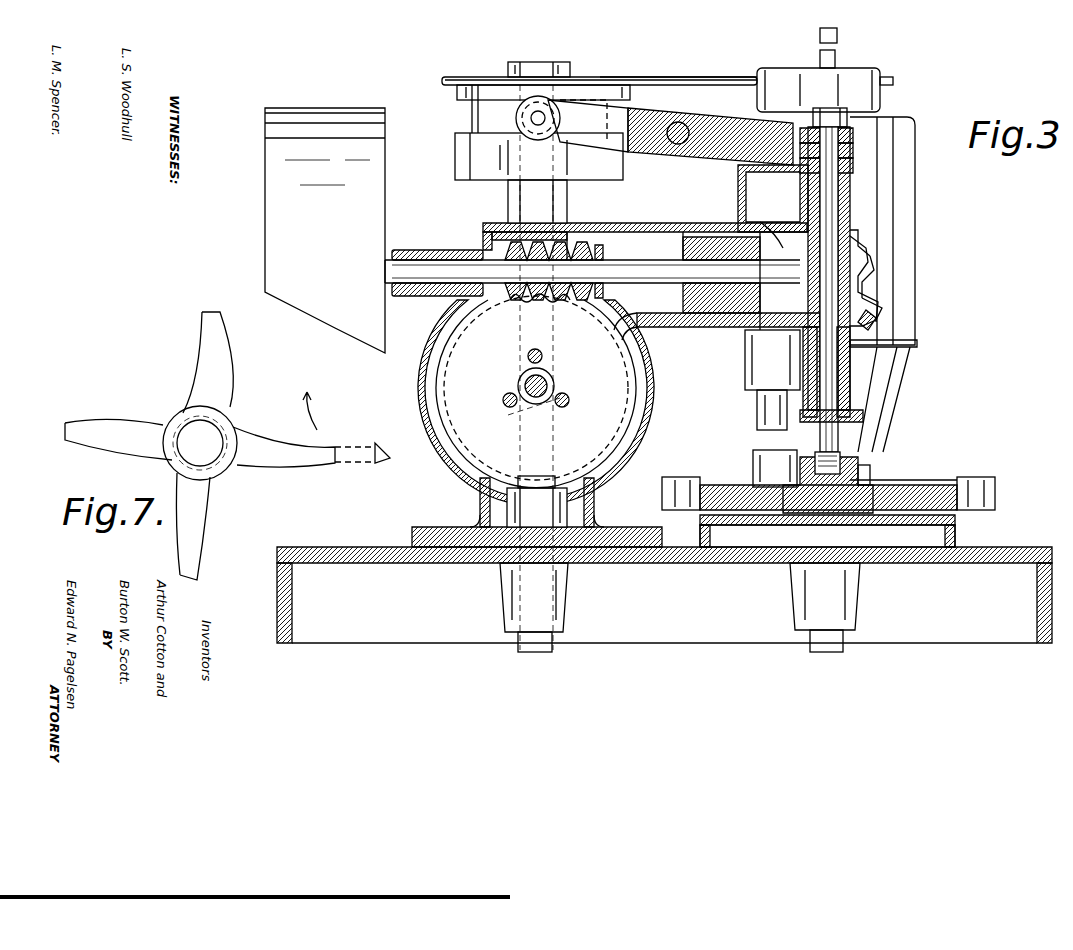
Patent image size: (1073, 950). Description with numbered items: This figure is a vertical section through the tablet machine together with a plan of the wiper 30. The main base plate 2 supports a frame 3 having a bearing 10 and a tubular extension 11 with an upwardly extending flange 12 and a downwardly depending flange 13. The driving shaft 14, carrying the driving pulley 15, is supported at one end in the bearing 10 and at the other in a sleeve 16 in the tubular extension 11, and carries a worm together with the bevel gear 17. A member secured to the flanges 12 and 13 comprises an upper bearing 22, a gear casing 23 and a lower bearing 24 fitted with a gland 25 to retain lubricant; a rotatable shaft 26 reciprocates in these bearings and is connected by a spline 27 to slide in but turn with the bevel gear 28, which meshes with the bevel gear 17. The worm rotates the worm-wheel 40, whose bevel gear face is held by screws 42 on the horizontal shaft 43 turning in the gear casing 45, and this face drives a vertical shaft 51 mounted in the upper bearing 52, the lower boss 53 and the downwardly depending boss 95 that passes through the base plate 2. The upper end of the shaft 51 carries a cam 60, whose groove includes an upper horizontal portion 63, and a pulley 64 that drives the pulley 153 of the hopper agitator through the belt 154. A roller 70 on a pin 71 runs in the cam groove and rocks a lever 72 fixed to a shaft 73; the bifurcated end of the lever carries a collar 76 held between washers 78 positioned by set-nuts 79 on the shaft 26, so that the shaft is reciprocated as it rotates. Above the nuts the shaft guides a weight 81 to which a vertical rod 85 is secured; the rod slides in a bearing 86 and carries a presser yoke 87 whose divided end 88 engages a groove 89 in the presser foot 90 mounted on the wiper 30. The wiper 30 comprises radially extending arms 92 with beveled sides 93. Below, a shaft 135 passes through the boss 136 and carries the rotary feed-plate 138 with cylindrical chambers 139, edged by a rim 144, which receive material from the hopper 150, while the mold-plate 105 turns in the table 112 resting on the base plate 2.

In FIG. 3, the main base plate 2 is at (335, 553).
In FIG. 3, the frame 3 is at (594, 516).
In FIG. 3, the bearing 10 is at (428, 248).
In FIG. 3, the tubular extension 11 is at (660, 228).
In FIG. 3, the upwardly extending flange 12 is at (795, 193).
In FIG. 3, the downwardly depending flange 13 is at (588, 258).
In FIG. 3, the driving shaft 14 is at (640, 272).
In FIG. 3, the driving pulley 15 is at (325, 230).
In FIG. 3, the sleeve 16 is at (683, 303).
In FIG. 3, the bevel gear 17 is at (758, 225).
In FIG. 3, the upper bearing 22 is at (842, 215).
In FIG. 3, the gear casing 23 is at (880, 300).
In FIG. 3, the lower bearing 24 is at (870, 390).
In FIG. 3, the gland 25 is at (863, 420).
In FIG. 3, the rotatable shaft 26 is at (845, 268).
In FIG. 3, the spline 27 is at (855, 248).
In FIG. 3, the bevel gear 28 is at (892, 314).
In FIG. 3, the wiper 30 is at (826, 508).
In FIG. 7, the wiper 30 is at (225, 433).
In FIG. 3, the worm-wheel 40 is at (536, 391).
In FIG. 3, the screws 42 is at (508, 405).
In FIG. 3, the horizontal shaft 43 is at (526, 383).
In FIG. 3, the gear casing 45 is at (655, 394).
In FIG. 3, the vertical shaft 51 is at (520, 645).
In FIG. 3, the upper bearing 52 is at (566, 201).
In FIG. 3, the lower boss 53 is at (537, 501).
In FIG. 3, the cam 60 is at (539, 156).
In FIG. 3, the upper horizontal portion 63 is at (460, 104).
In FIG. 3, the pulley 64 is at (620, 78).
In FIG. 3, the roller 70 is at (530, 110).
In FIG. 3, the pin 71 is at (546, 116).
In FIG. 3, the lever 72 is at (667, 122).
In FIG. 3, the shaft 73 is at (688, 126).
In FIG. 3, the collar 76 is at (853, 150).
In FIG. 3, the washers 78 is at (853, 135).
In FIG. 3, the set-nuts 79 is at (848, 116).
In FIG. 3, the weight 81 is at (818, 70).
In FIG. 3, the vertical rod 85 is at (775, 410).
In FIG. 3, the bearing 86 is at (770, 360).
In FIG. 3, the presser yoke 87 is at (765, 472).
In FIG. 3, the divided laterally extending end 88 is at (882, 460).
In FIG. 3, the groove 89 is at (820, 454).
In FIG. 3, the presser foot 90 is at (852, 460).
In FIG. 7, the radially extending arms 92 is at (185, 497).
In FIG. 7, the beveled sides 93 is at (372, 453).
In FIG. 3, the downwardly depending boss 95 is at (556, 598).
In FIG. 3, the mold-plate 105 is at (955, 518).
In FIG. 3, the table 112 is at (980, 535).
In FIG. 3, the shaft 135 is at (822, 640).
In FIG. 3, the boss 136 is at (825, 596).
In FIG. 3, the rotary feed-plate 138 is at (935, 495).
In FIG. 3, the cylindrical chambers 139 is at (880, 472).
In FIG. 3, the band or rim 144 is at (988, 480).
In FIG. 3, the hopper 150 is at (902, 176).
In FIG. 3, the pulley 153 is at (887, 77).
In FIG. 3, the belt 154 is at (726, 80).